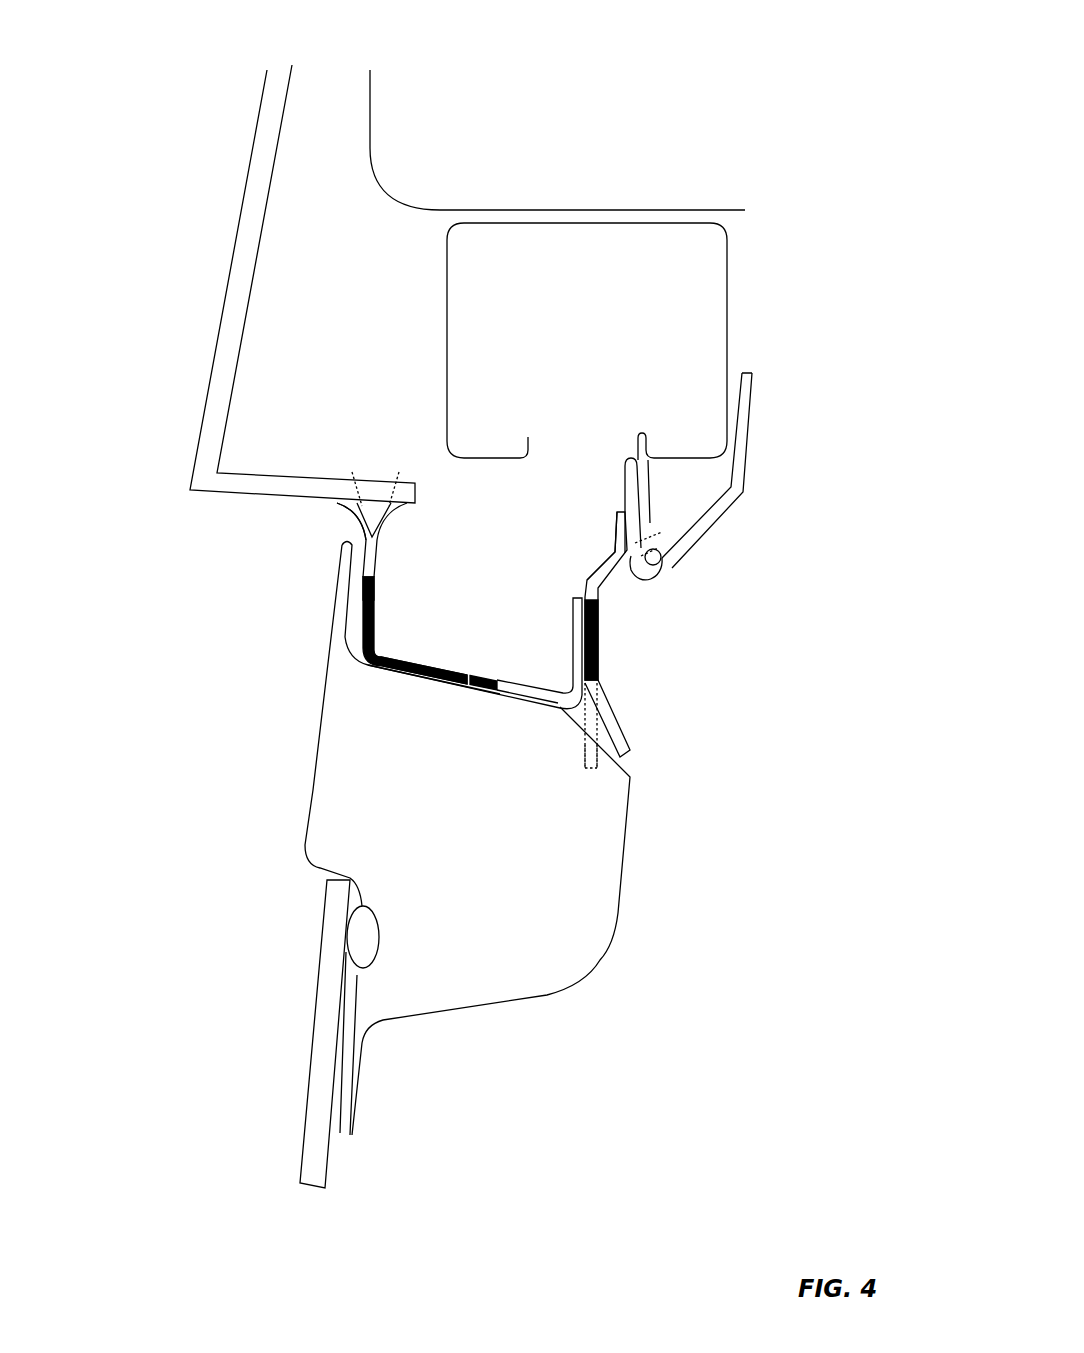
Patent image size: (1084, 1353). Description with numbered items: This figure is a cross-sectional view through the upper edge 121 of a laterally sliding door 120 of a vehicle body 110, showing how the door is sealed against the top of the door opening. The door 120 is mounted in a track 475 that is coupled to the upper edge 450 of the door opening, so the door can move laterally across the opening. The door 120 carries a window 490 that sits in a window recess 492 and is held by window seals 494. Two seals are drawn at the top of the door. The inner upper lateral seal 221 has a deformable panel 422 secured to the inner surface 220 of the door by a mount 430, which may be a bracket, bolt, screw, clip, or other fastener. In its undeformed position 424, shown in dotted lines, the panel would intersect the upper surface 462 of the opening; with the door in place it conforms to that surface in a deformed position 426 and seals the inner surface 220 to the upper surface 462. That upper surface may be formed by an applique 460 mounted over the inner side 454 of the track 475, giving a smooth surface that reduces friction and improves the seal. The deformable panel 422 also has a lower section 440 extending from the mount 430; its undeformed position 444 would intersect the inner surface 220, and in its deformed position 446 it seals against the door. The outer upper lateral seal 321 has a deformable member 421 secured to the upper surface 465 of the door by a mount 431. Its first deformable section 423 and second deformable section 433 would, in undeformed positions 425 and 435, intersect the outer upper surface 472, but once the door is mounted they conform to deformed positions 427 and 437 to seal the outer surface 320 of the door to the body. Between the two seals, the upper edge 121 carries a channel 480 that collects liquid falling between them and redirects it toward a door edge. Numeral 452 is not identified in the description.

The body 110 is at (190, 162).
The door 120 is at (666, 1026).
The upper edge 121 is at (511, 70).
The inner surface 220 is at (636, 905).
The inner upper lateral seal 221 is at (785, 470).
The outer surface 320 is at (259, 849).
The outer upper lateral seal 321 is at (178, 609).
The deformable member 421 is at (398, 586).
The deformable panel 422 is at (582, 556).
The first deformable section 423 is at (396, 578).
The undeformed position 424 is at (668, 570).
The undeformed position 425 is at (399, 478).
The deformed position 426 is at (613, 513).
The deformed position 427 is at (406, 502).
The mount 430 is at (600, 658).
The mount 431 is at (436, 667).
The second deformable section 433 is at (345, 540).
The undeformed position 435 is at (352, 473).
The deformed position 437 is at (343, 501).
The lower section 440 is at (613, 689).
The undeformed position 444 is at (622, 728).
The deformed position 446 is at (600, 750).
The upper edge 450 is at (548, 208).
The garnish body 452 is at (740, 290).
The inner side 454 is at (690, 456).
The applique 460 is at (748, 497).
The upper surface 462 is at (613, 477).
The upper surface 465 is at (401, 683).
The outer upper surface 472 is at (206, 505).
The track 475 is at (661, 299).
The channel 480 is at (568, 698).
The window 490 is at (306, 1089).
The window recess 492 is at (311, 878).
The window seals 494 is at (362, 940).